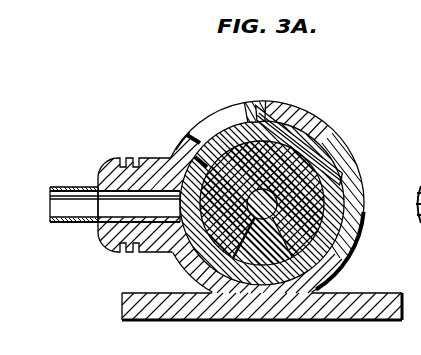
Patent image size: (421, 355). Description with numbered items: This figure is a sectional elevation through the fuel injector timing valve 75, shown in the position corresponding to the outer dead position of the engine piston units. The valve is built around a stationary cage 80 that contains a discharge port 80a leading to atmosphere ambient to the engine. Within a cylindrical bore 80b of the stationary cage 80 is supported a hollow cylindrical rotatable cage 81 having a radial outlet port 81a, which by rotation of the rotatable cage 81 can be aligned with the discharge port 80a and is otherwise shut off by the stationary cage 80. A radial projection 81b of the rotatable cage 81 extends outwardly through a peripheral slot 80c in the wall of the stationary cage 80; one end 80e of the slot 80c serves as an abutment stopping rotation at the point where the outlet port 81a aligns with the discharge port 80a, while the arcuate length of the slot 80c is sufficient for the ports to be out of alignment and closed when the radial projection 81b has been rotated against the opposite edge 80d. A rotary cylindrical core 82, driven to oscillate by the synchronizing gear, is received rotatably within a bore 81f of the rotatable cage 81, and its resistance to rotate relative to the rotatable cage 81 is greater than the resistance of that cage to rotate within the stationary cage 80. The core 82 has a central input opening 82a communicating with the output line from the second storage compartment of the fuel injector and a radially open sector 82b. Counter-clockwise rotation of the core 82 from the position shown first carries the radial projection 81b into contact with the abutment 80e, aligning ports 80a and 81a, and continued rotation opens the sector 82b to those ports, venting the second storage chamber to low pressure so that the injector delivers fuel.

The fuel injector timing valve 75 is at (346, 290).
The stationary cage 80 is at (333, 140).
The discharge port 80a is at (162, 212).
The cylindrical bore 80b is at (315, 132).
The peripheral slot 80c is at (212, 122).
The edge of the slot 80d is at (258, 105).
The end of the slot 80e is at (192, 138).
The rotatable cage 81 is at (363, 180).
The radial outlet port 81a is at (182, 143).
The radial projection 81b is at (248, 103).
The bore of the rotatable cage 81f is at (333, 167).
The rotary cylindrical core 82 is at (293, 140).
The central input opening 82a is at (268, 206).
The radially open sector 82b is at (264, 250).